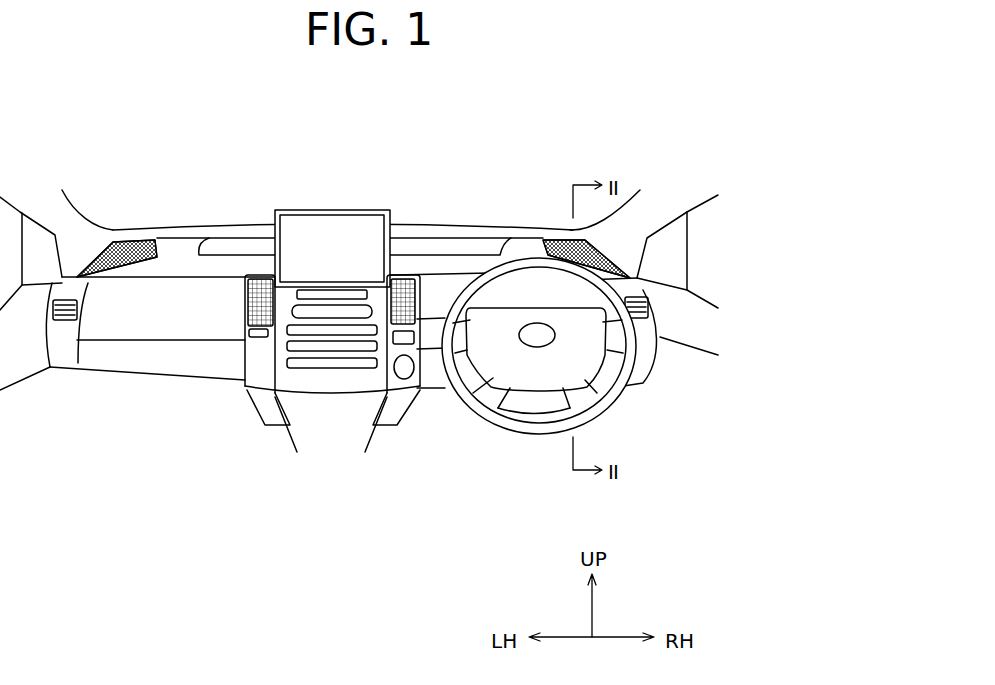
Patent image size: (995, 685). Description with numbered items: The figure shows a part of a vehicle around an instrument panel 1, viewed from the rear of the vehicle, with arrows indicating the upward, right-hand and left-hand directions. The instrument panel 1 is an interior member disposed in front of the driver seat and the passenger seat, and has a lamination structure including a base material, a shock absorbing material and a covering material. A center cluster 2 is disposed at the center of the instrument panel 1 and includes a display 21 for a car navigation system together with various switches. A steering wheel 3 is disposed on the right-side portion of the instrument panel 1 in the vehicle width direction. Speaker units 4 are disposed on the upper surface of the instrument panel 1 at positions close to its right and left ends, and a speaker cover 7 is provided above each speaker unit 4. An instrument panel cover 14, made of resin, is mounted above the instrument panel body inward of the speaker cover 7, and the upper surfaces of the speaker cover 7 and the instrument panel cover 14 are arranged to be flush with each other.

The instrument panel 1 is at (514, 229).
The center cluster 2 is at (318, 421).
The steering wheel 3 is at (513, 433).
The speaker unit 4 is at (128, 240).
The speaker cover 7 is at (353, 259).
The instrument panel cover 14 is at (180, 240).
The display 21 is at (334, 237).